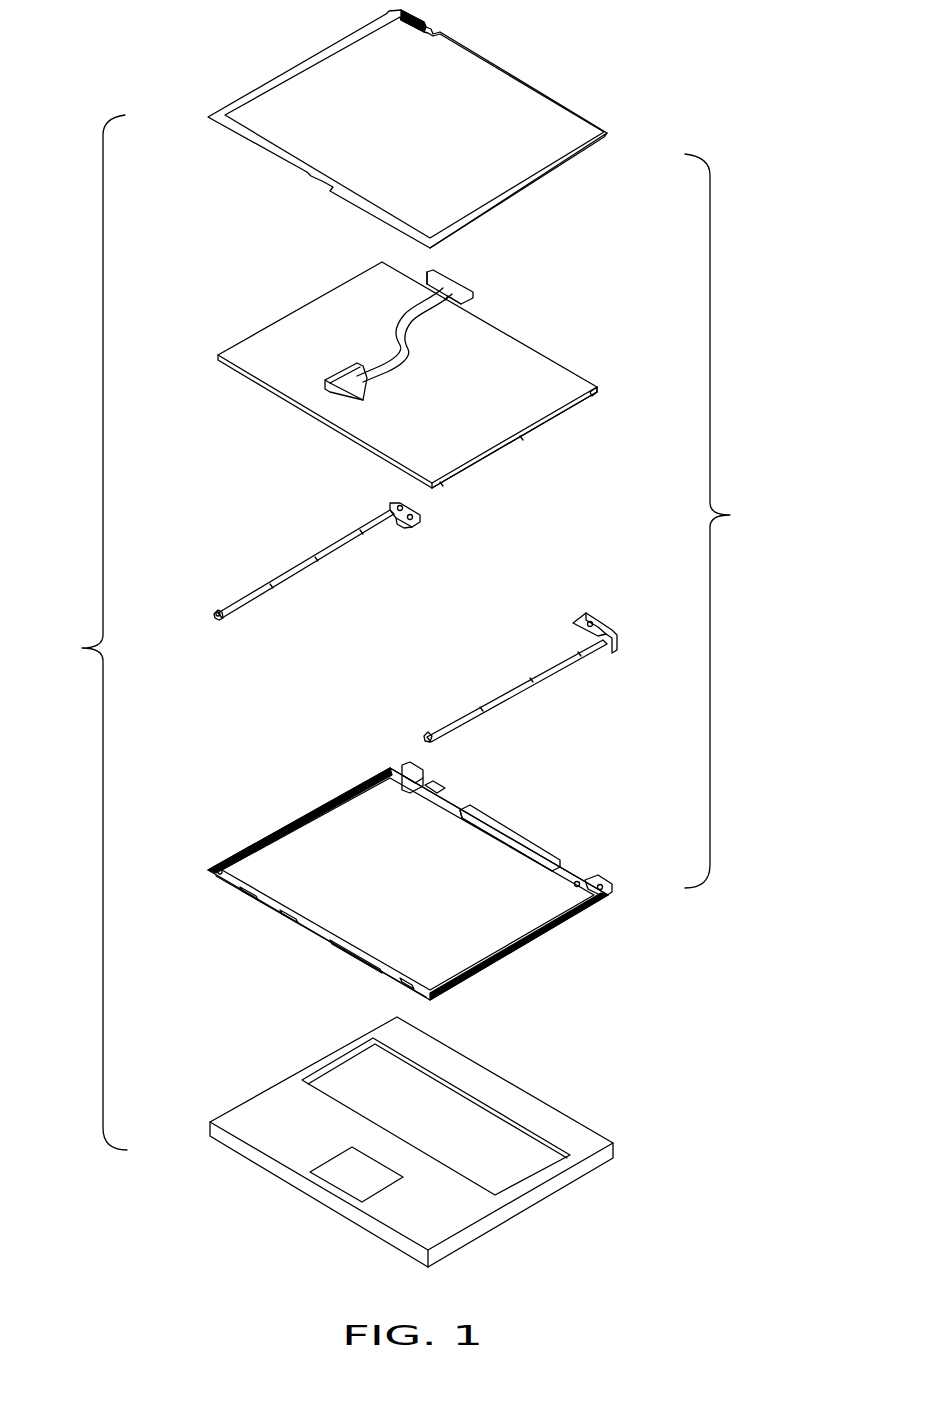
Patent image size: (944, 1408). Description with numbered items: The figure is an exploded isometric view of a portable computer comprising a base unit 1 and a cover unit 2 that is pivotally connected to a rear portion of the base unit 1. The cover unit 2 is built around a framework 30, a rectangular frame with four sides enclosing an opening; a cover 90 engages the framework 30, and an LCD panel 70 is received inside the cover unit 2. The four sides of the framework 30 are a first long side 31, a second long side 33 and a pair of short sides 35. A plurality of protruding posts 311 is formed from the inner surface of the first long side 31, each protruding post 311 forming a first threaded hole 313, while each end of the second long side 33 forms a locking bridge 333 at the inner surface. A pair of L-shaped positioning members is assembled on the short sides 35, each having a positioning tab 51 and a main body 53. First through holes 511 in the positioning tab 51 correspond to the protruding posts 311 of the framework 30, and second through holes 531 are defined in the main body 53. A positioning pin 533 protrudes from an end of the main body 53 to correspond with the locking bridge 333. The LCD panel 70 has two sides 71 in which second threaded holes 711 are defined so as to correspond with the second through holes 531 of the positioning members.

The base unit 1 is at (262, 1108).
The cover unit 2 is at (419, 632).
The framework 30 is at (410, 871).
The first long side 31 is at (453, 805).
The protruding post 311 is at (590, 887).
The first threaded hole 313 is at (577, 883).
The second long side 33 is at (270, 903).
The locking bridge 333 is at (212, 875).
The short side 35 is at (300, 815).
The positioning tab 51 is at (413, 523).
The first through hole 511 is at (429, 549).
The main body 53 is at (322, 555).
The second through hole 531 is at (232, 603).
The positioning pin 533 is at (218, 613).
The LCD panel 70 is at (426, 382).
The side 71 is at (510, 437).
The second threaded hole 711 is at (590, 395).
The cover 90 is at (497, 88).